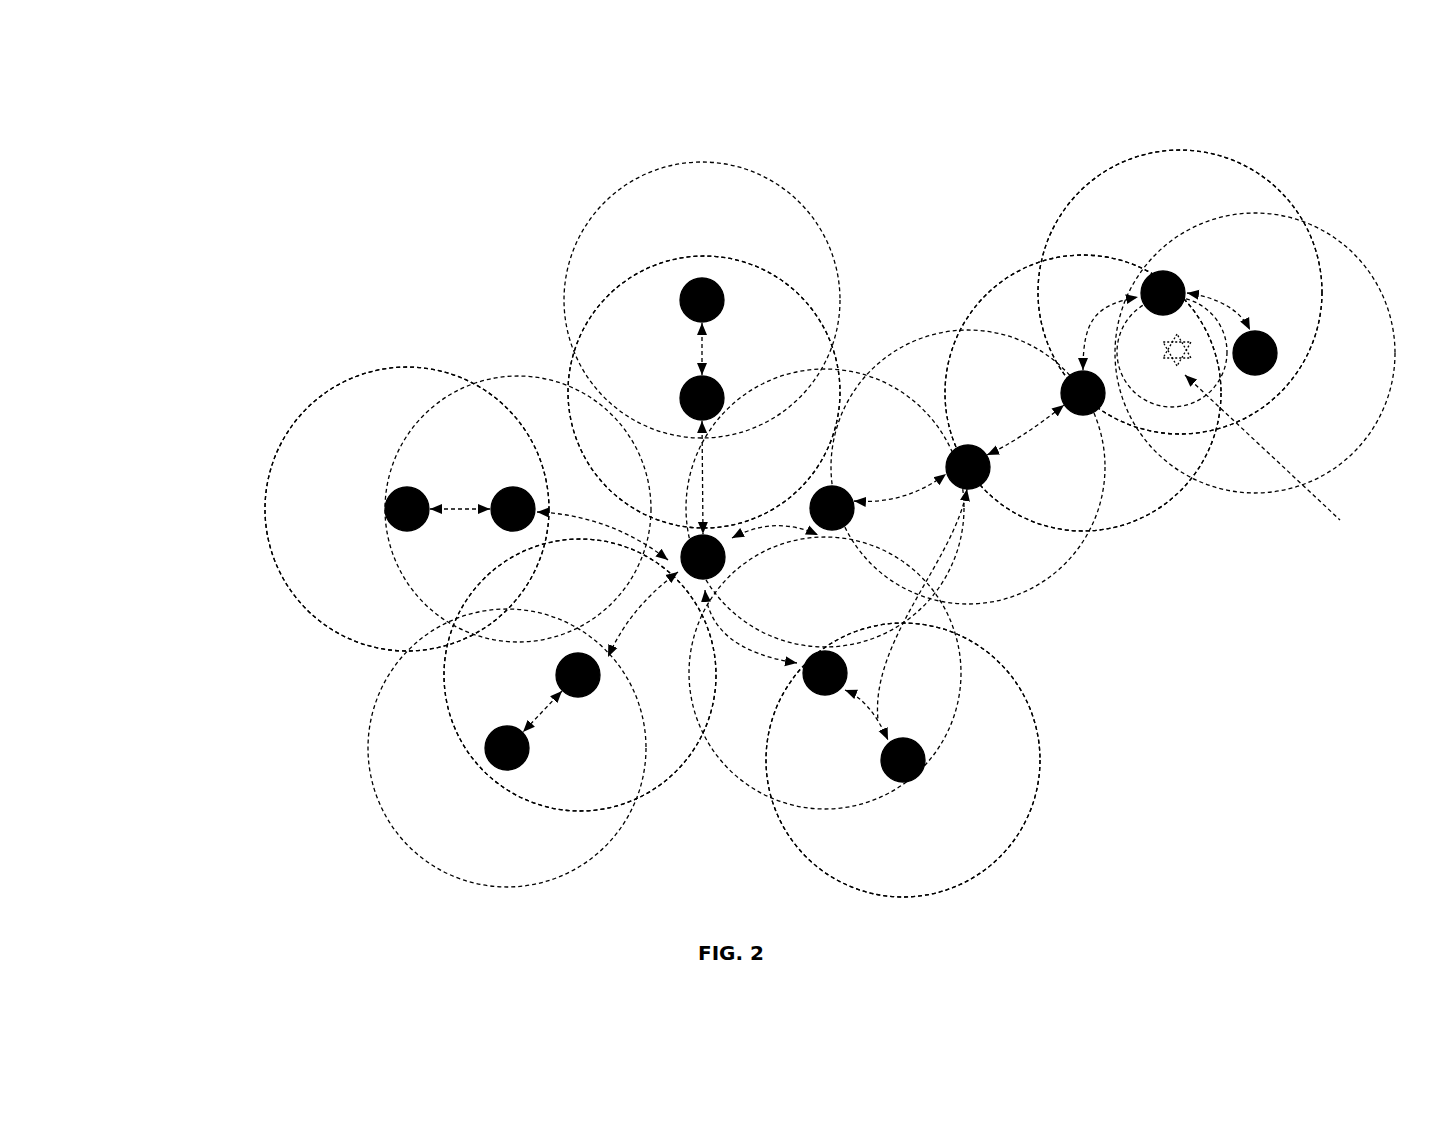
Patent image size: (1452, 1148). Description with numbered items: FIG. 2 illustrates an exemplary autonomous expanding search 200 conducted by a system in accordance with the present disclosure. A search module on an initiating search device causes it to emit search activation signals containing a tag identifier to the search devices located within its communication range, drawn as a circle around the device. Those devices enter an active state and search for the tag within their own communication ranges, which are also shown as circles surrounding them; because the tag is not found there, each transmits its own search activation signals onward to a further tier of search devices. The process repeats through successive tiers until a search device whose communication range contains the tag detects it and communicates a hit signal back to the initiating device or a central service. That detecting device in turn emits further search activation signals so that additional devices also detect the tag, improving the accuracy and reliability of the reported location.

The wireless mesh network 200 is at (368, 163).